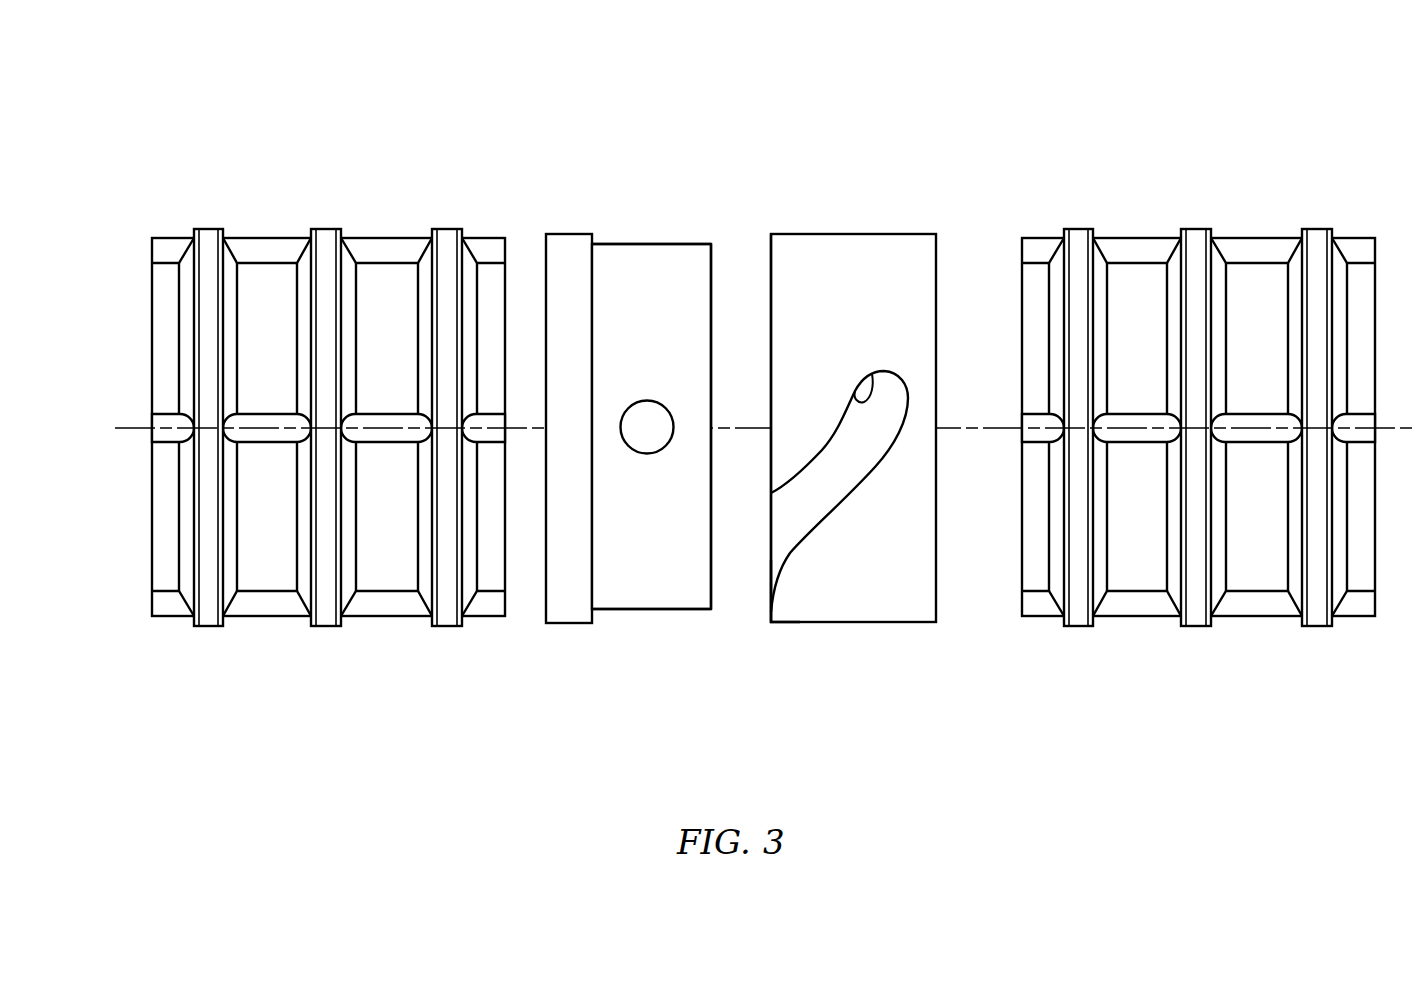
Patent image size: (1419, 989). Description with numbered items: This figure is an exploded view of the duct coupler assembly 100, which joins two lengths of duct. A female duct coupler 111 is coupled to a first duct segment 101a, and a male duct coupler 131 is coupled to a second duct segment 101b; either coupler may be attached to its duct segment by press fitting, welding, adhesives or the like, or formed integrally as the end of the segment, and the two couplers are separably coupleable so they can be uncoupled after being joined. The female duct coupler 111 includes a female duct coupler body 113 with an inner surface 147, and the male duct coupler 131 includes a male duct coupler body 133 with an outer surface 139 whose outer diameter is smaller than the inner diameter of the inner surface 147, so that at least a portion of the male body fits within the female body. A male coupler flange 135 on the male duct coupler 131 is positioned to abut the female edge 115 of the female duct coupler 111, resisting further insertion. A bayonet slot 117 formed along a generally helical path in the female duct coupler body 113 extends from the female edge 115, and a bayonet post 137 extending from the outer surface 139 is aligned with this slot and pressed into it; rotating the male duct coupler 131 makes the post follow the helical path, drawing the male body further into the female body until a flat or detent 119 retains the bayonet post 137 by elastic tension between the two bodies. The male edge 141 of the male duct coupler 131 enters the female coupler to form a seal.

The duct coupler assembly 100 is at (555, 120).
The first duct segment 101a is at (1109, 237).
The second duct segment 101b is at (380, 238).
The female duct coupler 111 is at (876, 470).
The female duct coupler body 113 is at (908, 623).
The female edge 115 is at (771, 618).
The bayonet slot 117 is at (857, 488).
The flat or detent 119 is at (867, 373).
The male duct coupler 131 is at (615, 470).
The male duct coupler body 133 is at (617, 610).
The male coupler flange 135 is at (558, 625).
The bayonet post 137 is at (657, 402).
The outer surface 139 is at (620, 246).
The male edge 141 is at (712, 258).
The inner surface 147 is at (771, 258).